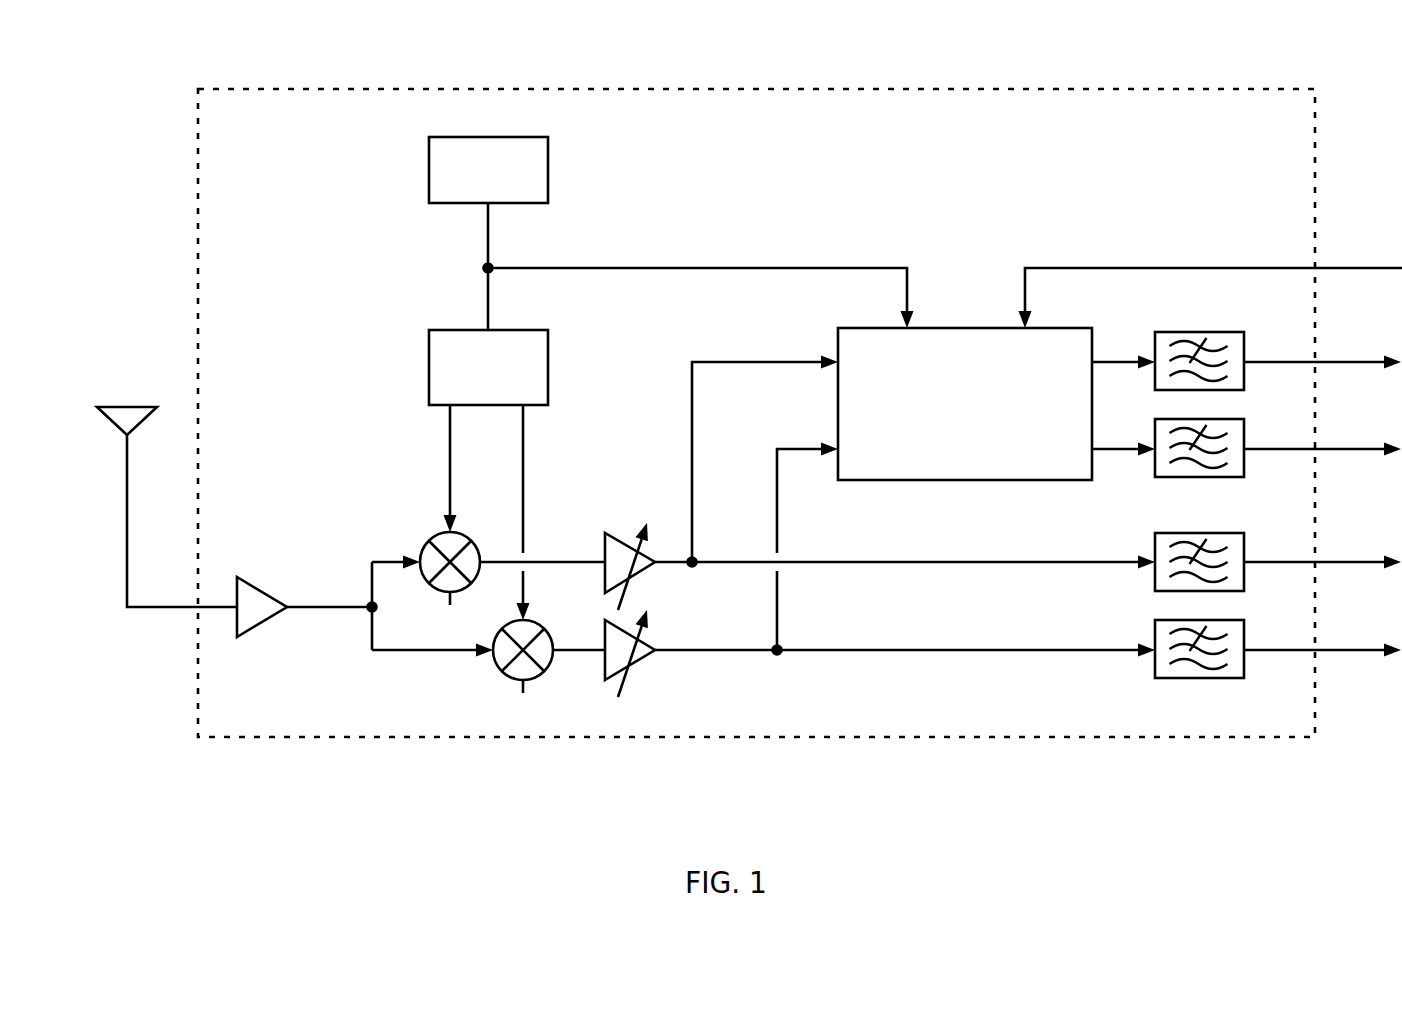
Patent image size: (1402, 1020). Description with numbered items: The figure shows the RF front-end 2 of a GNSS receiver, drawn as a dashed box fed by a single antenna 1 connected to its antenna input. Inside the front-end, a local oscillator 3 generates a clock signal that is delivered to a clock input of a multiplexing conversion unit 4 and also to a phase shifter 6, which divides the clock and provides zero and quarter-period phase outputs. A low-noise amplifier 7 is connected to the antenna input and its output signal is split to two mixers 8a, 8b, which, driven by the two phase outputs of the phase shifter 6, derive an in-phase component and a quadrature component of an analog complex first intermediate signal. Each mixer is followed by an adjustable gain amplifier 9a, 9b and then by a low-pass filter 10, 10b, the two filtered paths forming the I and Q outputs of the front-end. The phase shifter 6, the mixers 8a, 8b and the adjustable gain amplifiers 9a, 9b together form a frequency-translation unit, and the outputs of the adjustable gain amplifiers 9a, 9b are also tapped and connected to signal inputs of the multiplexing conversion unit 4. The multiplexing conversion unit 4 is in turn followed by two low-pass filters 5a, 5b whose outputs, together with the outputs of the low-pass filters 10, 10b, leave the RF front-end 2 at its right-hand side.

The antenna 1 is at (118, 417).
The RF front-end 2 is at (1292, 138).
The local oscillator 3 is at (538, 173).
The multiplexing conversion unit 4 is at (1069, 462).
The low-pass filter 5a is at (1233, 342).
The low-pass filter 5b is at (1233, 429).
The phase shifter 6 is at (538, 370).
The low-noise amplifier 7 is at (253, 598).
The mixer 8a is at (450, 585).
The mixer 8b is at (523, 673).
The adjustable gain amplifier 9a is at (643, 567).
The adjustable gain amplifier 9b is at (643, 655).
The low-pass filter 10 is at (1233, 543).
The low-pass filter 10b is at (1233, 630).